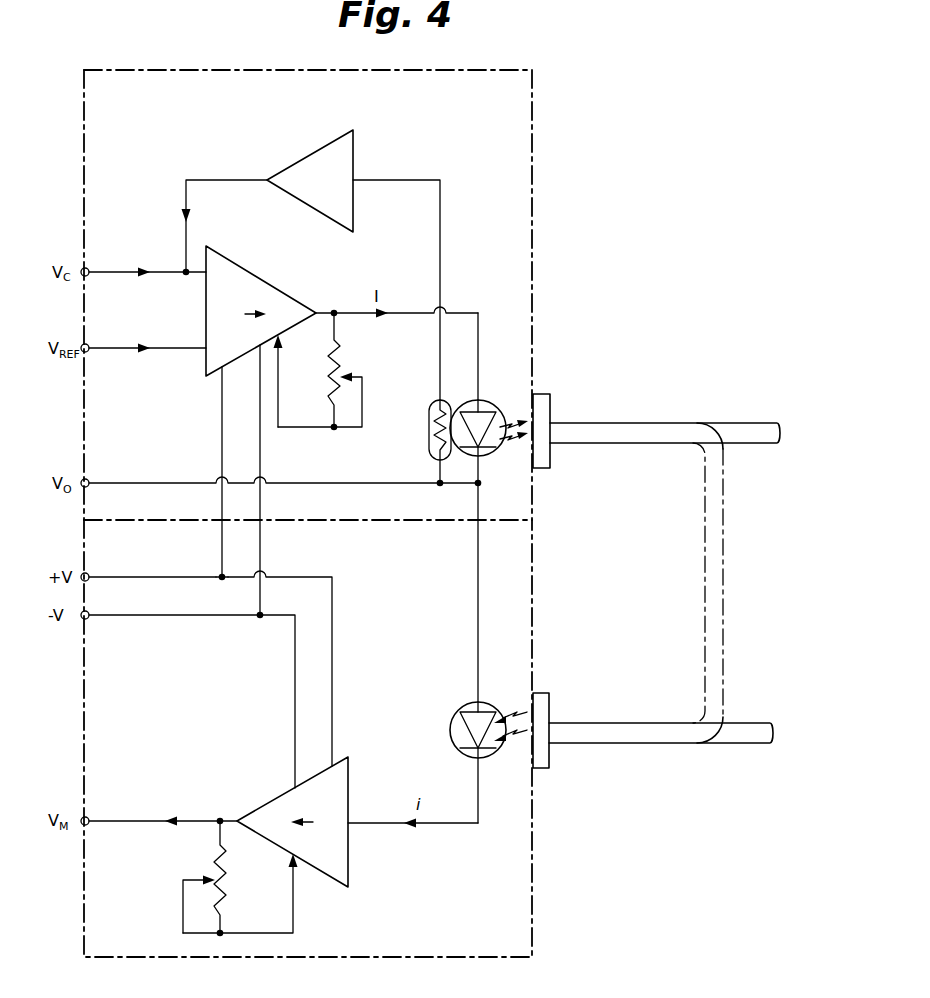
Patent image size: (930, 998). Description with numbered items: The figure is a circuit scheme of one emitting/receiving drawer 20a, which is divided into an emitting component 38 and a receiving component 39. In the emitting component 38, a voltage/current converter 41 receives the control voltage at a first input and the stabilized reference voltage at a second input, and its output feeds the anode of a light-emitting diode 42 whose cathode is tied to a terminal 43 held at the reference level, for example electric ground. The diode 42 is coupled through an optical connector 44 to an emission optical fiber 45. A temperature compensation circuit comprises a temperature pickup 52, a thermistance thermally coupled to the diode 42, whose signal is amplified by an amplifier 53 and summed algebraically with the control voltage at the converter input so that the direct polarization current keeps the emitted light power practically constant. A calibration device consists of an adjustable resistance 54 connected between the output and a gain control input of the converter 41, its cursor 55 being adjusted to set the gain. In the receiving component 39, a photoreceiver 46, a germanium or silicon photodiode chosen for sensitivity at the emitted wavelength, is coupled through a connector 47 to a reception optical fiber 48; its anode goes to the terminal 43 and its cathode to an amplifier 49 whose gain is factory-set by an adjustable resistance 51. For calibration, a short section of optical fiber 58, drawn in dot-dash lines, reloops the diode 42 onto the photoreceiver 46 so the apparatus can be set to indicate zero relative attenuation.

The drawer 20a is at (562, 154).
The emitting component 38 is at (533, 218).
The receiving component 39 is at (533, 853).
The voltage/current converter 41 is at (288, 292).
The light-emitting diode 42 is at (486, 455).
The terminal 43 is at (89, 479).
The optical connector 44 is at (551, 460).
The emission optical fiber 45 is at (622, 424).
The photoreceiver 46 is at (452, 742).
The connector 47 is at (550, 758).
The reception optical fiber 48 is at (632, 722).
The amplifier 49 is at (278, 797).
The adjustable resistance 51 is at (226, 902).
The temperature pickup 52 is at (429, 432).
The amplifier 53 is at (315, 150).
The adjustable resistance 54 is at (328, 362).
The cursor 55 is at (348, 377).
The short section of optical fiber 58 is at (705, 591).